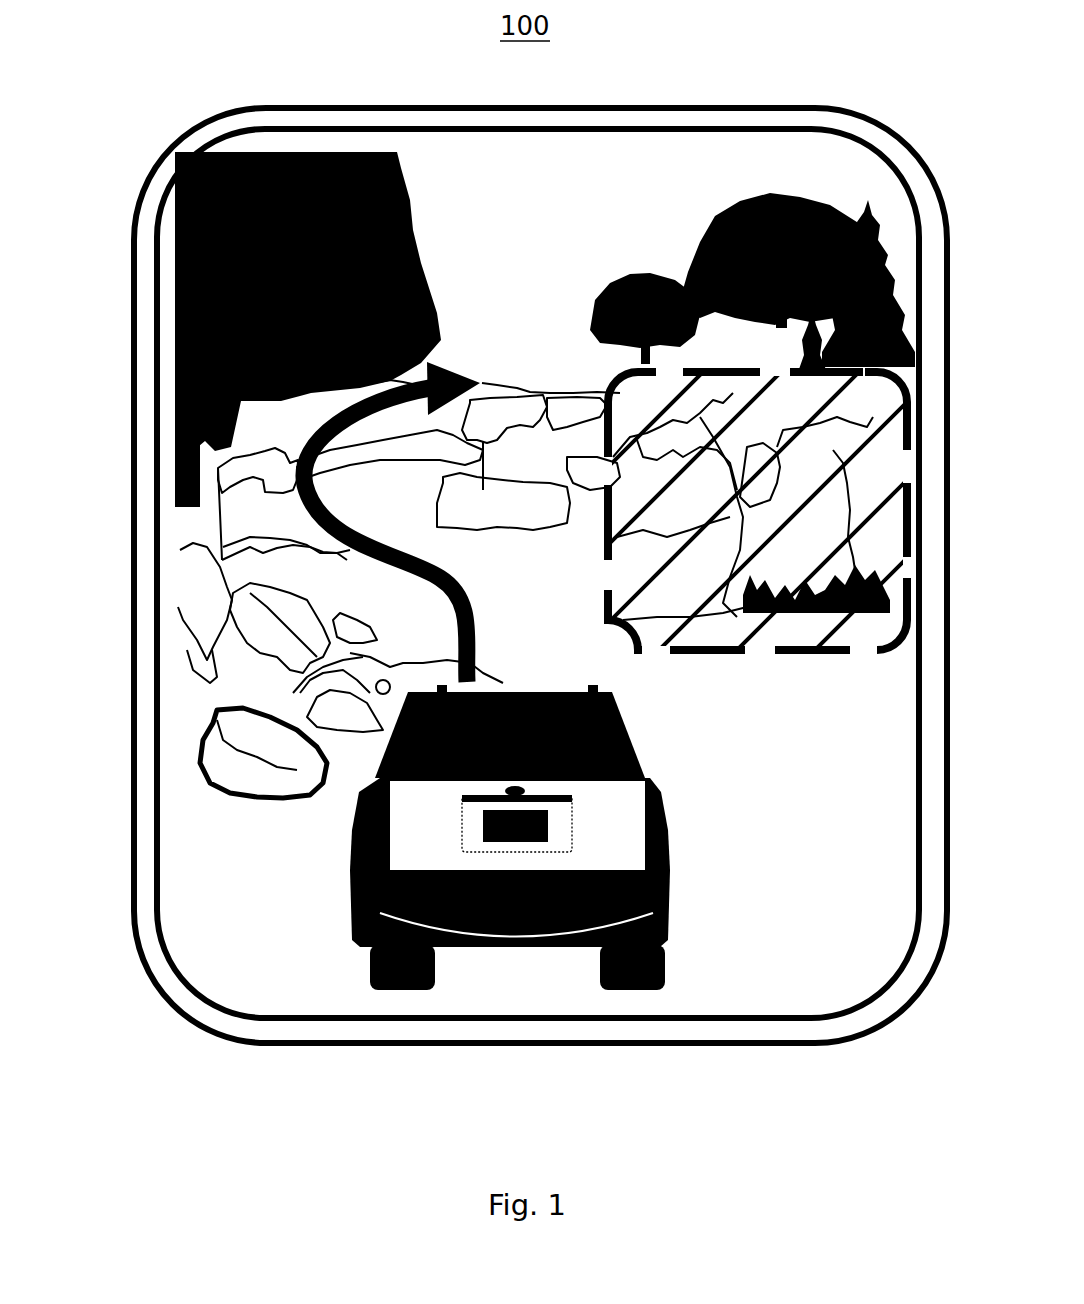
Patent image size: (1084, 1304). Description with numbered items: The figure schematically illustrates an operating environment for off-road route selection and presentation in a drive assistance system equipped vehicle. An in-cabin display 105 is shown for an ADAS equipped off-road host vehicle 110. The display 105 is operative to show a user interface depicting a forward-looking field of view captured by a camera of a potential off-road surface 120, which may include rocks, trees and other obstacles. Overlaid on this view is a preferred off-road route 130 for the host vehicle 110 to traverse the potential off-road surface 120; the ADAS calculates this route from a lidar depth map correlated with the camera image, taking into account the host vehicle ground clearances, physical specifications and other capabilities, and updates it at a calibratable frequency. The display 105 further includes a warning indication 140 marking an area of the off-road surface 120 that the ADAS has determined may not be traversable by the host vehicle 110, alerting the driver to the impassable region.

The in-cabin display 105 is at (893, 121).
The host vehicle 110 is at (680, 820).
The potential off-road surface 120 is at (183, 698).
The preferred off-road route 130 is at (440, 360).
The warning indication 140 is at (848, 672).